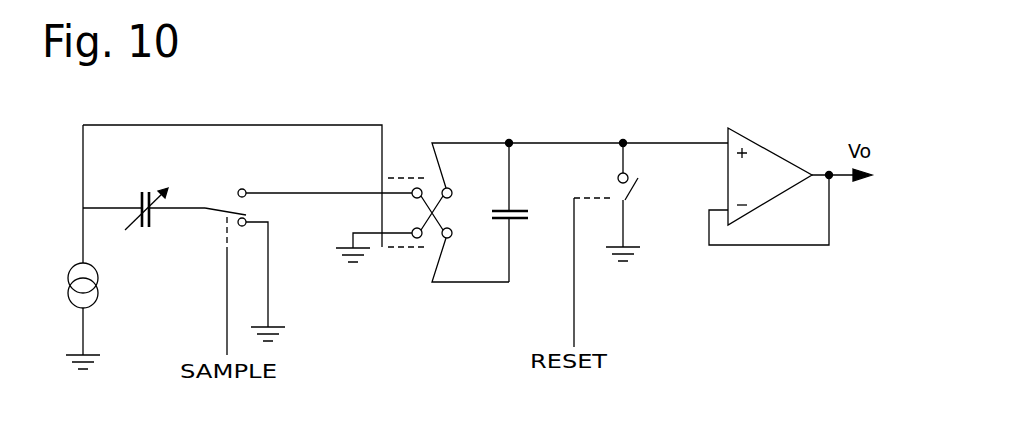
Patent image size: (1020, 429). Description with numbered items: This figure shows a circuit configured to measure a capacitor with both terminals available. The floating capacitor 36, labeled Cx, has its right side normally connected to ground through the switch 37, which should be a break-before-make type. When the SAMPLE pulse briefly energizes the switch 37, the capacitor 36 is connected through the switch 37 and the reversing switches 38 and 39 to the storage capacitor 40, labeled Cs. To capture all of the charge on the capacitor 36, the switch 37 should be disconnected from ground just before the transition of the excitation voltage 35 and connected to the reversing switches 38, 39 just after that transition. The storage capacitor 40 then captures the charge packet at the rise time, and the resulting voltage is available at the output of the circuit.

The excitation voltage 35 is at (70, 255).
The floating capacitor 36 is at (147, 180).
The switch 37 is at (212, 220).
The reversing switch 38 is at (425, 160).
The reversing switch 39 is at (415, 270).
The storage capacitor 40 is at (503, 227).